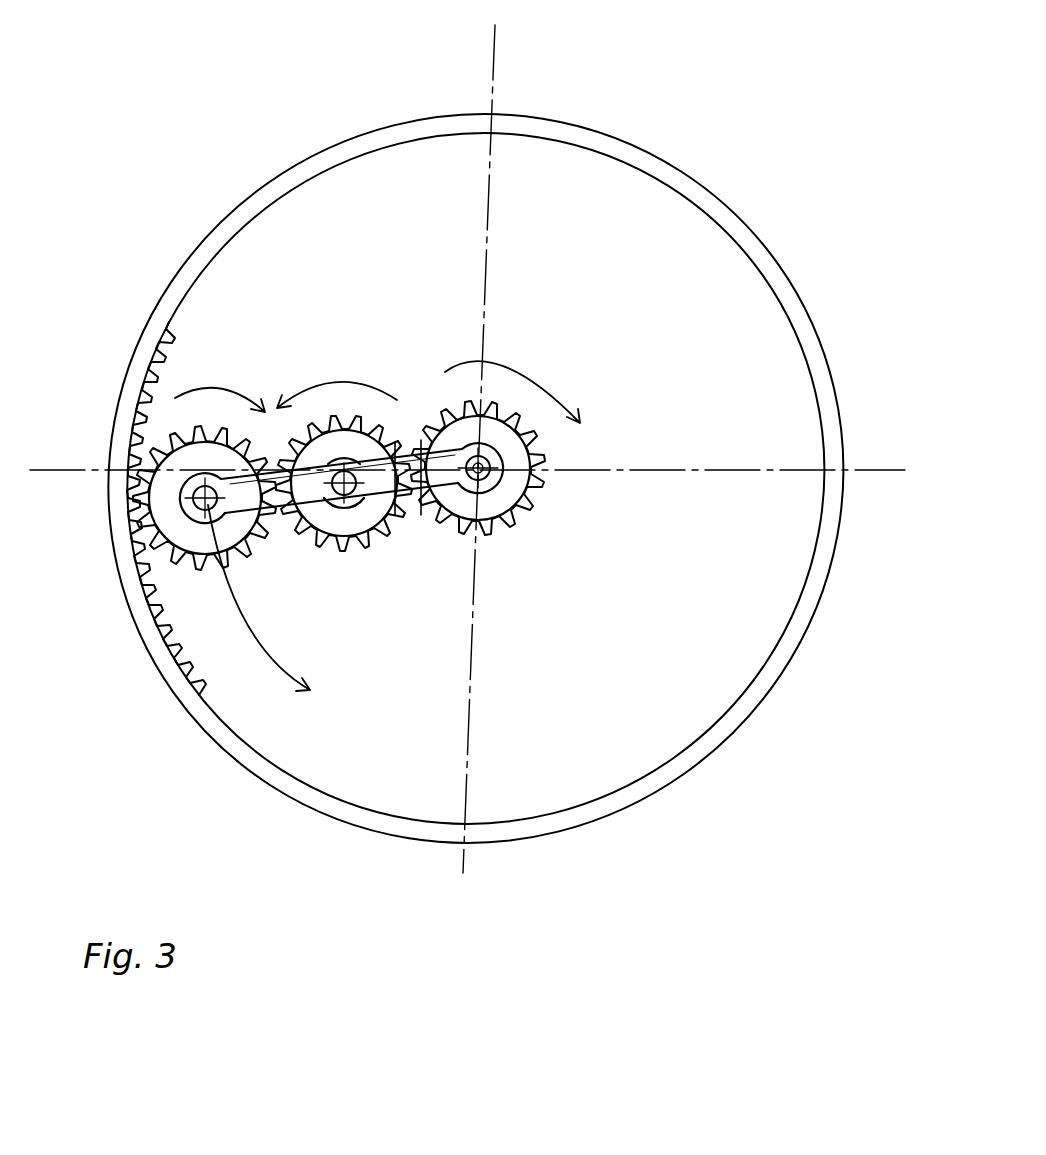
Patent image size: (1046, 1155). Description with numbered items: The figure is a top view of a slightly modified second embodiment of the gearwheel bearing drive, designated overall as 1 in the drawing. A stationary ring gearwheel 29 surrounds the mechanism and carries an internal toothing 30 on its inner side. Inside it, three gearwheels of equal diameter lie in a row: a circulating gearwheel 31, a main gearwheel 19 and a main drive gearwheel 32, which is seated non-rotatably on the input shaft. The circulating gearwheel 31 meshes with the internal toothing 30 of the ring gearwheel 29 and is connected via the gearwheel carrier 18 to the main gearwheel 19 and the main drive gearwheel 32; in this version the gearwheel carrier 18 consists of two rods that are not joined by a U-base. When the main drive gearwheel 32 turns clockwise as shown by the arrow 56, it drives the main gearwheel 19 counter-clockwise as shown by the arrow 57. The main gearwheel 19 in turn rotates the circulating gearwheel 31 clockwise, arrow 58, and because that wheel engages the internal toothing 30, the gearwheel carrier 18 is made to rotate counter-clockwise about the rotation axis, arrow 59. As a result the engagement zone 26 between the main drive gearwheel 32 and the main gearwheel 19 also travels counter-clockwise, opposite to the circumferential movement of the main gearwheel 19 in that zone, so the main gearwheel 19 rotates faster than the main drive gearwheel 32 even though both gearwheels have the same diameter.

The gear arrangement / drive device 1 is at (733, 112).
The gearwheel carrier 18 is at (365, 528).
The main gearwheel 19 is at (350, 527).
The engagement zone 26 is at (418, 440).
The ring gearwheel 29 is at (190, 665).
The internal toothing 30 is at (212, 694).
The circulating gearwheel 31 is at (178, 452).
The main drive gearwheel 32 is at (504, 513).
The arrow 56 is at (547, 380).
The arrow 57 is at (347, 382).
The arrow 58 is at (222, 392).
The arrow 59 is at (277, 665).